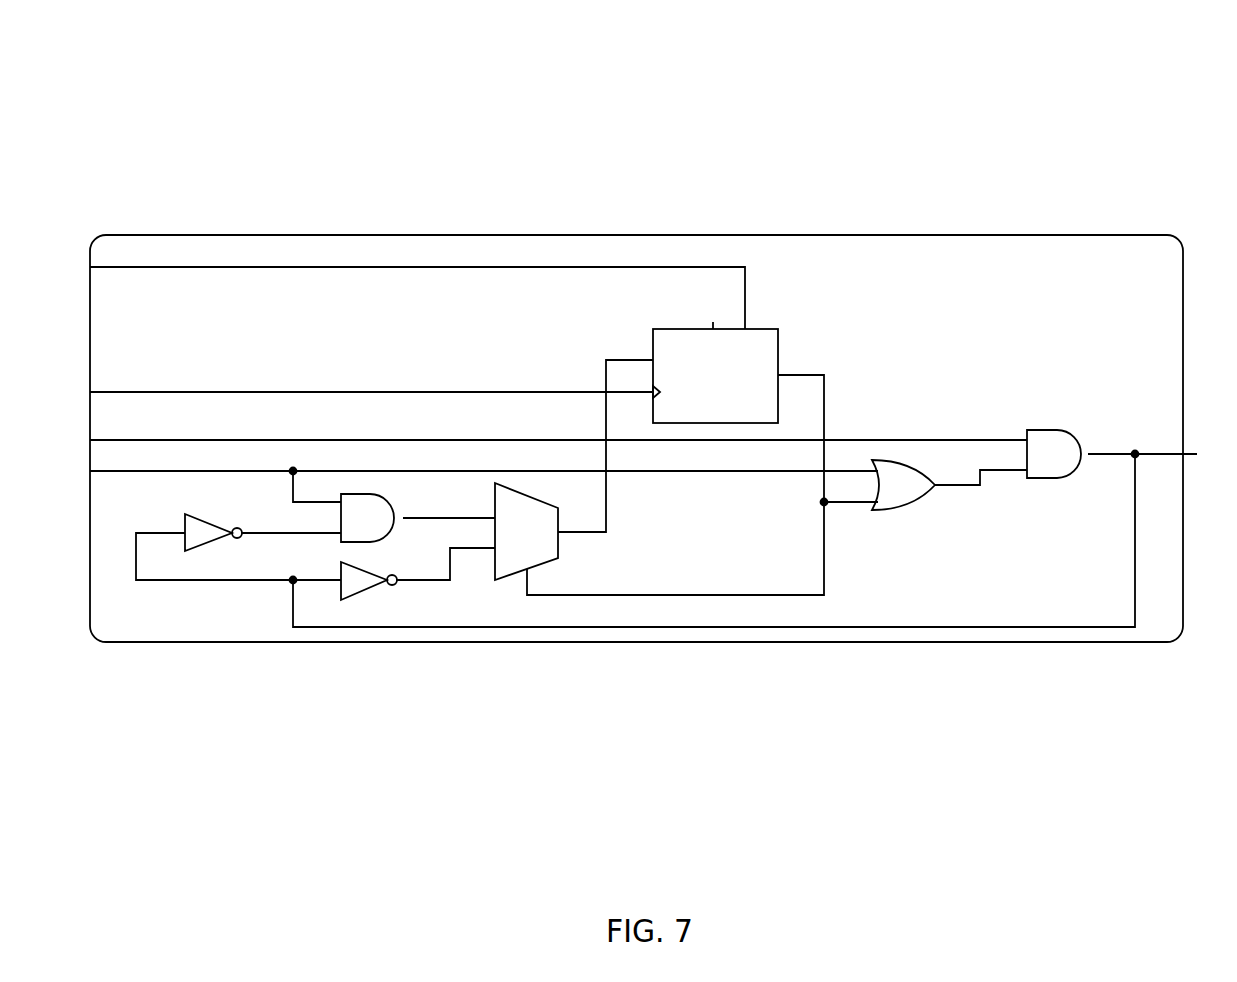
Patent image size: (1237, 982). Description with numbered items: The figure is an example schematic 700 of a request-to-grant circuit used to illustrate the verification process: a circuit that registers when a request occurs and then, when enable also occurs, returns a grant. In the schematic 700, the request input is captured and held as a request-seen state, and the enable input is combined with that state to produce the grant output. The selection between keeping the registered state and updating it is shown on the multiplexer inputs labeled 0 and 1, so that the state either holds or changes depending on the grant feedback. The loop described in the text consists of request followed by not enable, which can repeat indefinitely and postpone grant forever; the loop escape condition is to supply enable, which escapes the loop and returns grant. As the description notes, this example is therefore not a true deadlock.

The arbiter circuit 700 is at (108, 82).
The multiplexer input 0 is at (449, 508).
The multiplexer input 1 is at (446, 555).